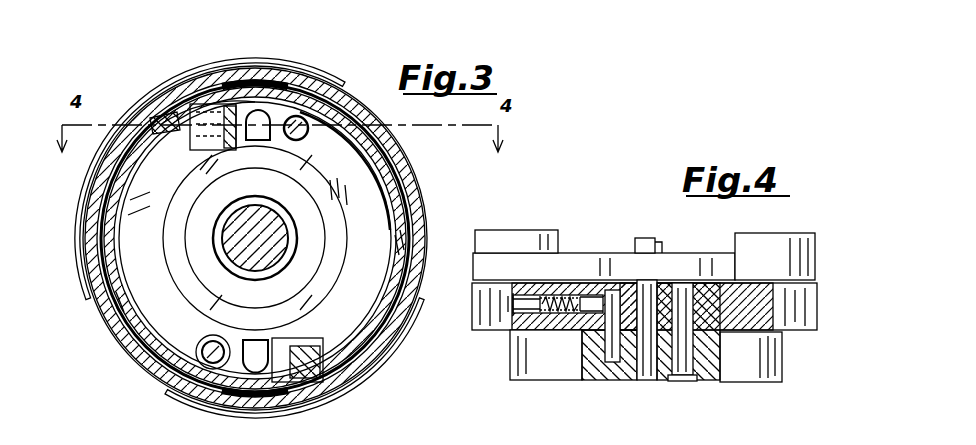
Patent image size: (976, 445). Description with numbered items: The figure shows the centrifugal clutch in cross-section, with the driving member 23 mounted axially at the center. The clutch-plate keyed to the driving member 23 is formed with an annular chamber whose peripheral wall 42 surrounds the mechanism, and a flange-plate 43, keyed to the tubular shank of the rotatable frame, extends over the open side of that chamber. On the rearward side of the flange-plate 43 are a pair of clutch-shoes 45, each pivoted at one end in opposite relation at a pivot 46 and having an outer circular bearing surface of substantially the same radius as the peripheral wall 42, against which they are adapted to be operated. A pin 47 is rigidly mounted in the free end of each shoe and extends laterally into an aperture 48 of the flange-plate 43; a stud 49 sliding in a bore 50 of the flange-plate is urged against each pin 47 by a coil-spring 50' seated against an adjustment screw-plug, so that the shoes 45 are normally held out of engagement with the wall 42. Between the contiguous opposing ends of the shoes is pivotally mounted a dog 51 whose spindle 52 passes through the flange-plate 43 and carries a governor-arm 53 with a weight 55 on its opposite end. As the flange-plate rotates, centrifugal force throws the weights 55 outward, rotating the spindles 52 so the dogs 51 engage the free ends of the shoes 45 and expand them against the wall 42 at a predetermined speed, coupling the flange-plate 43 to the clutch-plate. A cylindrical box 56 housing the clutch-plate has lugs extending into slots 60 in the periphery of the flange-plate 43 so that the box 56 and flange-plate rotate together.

In FIG. 3, the driving member 23 is at (275, 256).
In FIG. 3, the peripheral wall 42 is at (138, 160).
In FIG. 3, the flange-plate 43 is at (255, 238).
In FIG. 4, the flange-plate 43 is at (800, 302).
In FIG. 3, the clutch-shoes 45 is at (320, 88).
In FIG. 4, the clutch-shoes 45 is at (562, 370).
In FIG. 3, the pivot 46 is at (301, 136).
In FIG. 4, the pivot 46 is at (690, 372).
In FIG. 3, the pin 47 is at (185, 147).
In FIG. 4, the pin 47 is at (614, 300).
In FIG. 4, the aperture 48 is at (612, 296).
In FIG. 3, the stud 49 is at (206, 88).
In FIG. 4, the stud 49 is at (570, 312).
In FIG. 4, the bore 50 is at (558, 312).
In FIG. 4, the coil-spring 50' is at (493, 324).
In FIG. 3, the dog 51 is at (266, 144).
In FIG. 4, the dog 51 is at (650, 378).
In FIG. 4, the spindle 52 is at (645, 240).
In FIG. 4, the governor-arm 53 is at (578, 262).
In FIG. 4, the weight 55 is at (510, 240).
In FIG. 3, the cylindrical box 56 is at (404, 174).
In FIG. 3, the slots 60 is at (250, 82).